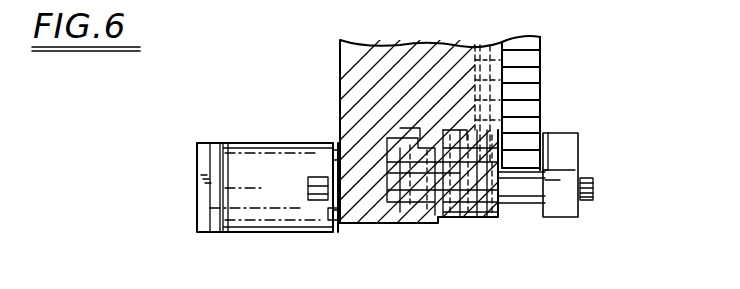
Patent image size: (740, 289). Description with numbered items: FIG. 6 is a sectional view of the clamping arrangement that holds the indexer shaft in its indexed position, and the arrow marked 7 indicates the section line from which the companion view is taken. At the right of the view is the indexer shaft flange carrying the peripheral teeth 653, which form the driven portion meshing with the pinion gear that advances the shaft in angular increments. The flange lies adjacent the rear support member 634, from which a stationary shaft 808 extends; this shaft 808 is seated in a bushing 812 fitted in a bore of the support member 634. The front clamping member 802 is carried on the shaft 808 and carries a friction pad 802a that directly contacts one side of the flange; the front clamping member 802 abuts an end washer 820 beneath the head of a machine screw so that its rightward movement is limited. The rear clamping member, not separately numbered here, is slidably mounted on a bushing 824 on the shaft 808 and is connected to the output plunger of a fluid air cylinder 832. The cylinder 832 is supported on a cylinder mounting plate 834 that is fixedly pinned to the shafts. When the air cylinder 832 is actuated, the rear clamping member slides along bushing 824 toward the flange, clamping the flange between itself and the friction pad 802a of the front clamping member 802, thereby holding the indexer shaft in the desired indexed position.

The rear support member 634 is at (340, 50).
The peripheral teeth 653 is at (523, 48).
The front clamping member 802 is at (575, 133).
The friction pad 802a is at (548, 133).
The stationary shaft 808 is at (520, 185).
The end washer 820 is at (590, 177).
The fluid air cylinder 832 is at (237, 137).
The bushing 812 is at (315, 145).
The cylinder mounting plate 834 is at (434, 223).
The bushing 824 is at (472, 228).
The section line for FIG. 7 is at (273, 262).